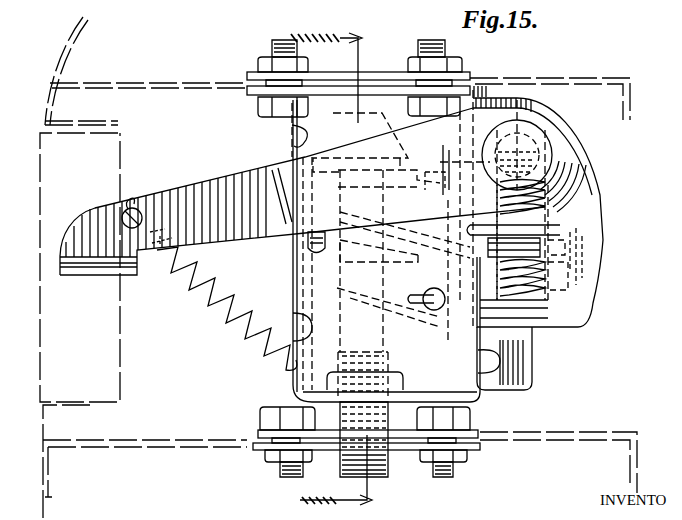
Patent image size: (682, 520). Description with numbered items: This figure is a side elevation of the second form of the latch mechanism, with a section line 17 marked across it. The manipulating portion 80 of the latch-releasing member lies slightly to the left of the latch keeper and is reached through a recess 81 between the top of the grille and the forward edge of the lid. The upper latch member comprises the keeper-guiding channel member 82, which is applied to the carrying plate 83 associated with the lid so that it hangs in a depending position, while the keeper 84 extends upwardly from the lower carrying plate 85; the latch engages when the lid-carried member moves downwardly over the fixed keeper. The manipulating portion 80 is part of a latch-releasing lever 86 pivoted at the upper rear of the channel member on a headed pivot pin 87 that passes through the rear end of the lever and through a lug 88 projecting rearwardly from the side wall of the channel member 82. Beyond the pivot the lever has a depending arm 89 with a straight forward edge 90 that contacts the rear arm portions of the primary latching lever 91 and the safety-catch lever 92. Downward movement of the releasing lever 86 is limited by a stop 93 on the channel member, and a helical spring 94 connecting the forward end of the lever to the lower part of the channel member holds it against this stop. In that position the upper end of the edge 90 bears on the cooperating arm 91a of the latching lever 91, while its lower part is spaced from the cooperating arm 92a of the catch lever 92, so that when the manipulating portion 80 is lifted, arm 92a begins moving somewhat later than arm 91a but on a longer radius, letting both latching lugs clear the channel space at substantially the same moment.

The section line 17- 17 is at (331, 271).
The manipulating portion of the latch-releasing member 80 is at (94, 216).
The recess 81 is at (100, 352).
The keeper-guiding channel member 82 is at (293, 130).
The carrying plate 83 is at (205, 82).
The keeper 84 is at (384, 457).
The lower carrying plate 85 is at (545, 432).
The latch-releasing lever 86 is at (430, 157).
The headed pivot pin 87 is at (528, 152).
The lug 88 is at (545, 105).
The depending arm 89 is at (588, 233).
The straight forward edge 90 is at (548, 290).
The primary latching lever 91 is at (433, 187).
The cooperating arm of the latching lever 91a is at (520, 243).
The safety-catch lever 92 is at (432, 262).
The cooperating arm of the catch lever 92a is at (528, 320).
The stop 93 is at (308, 248).
The helical spring 94 is at (222, 325).